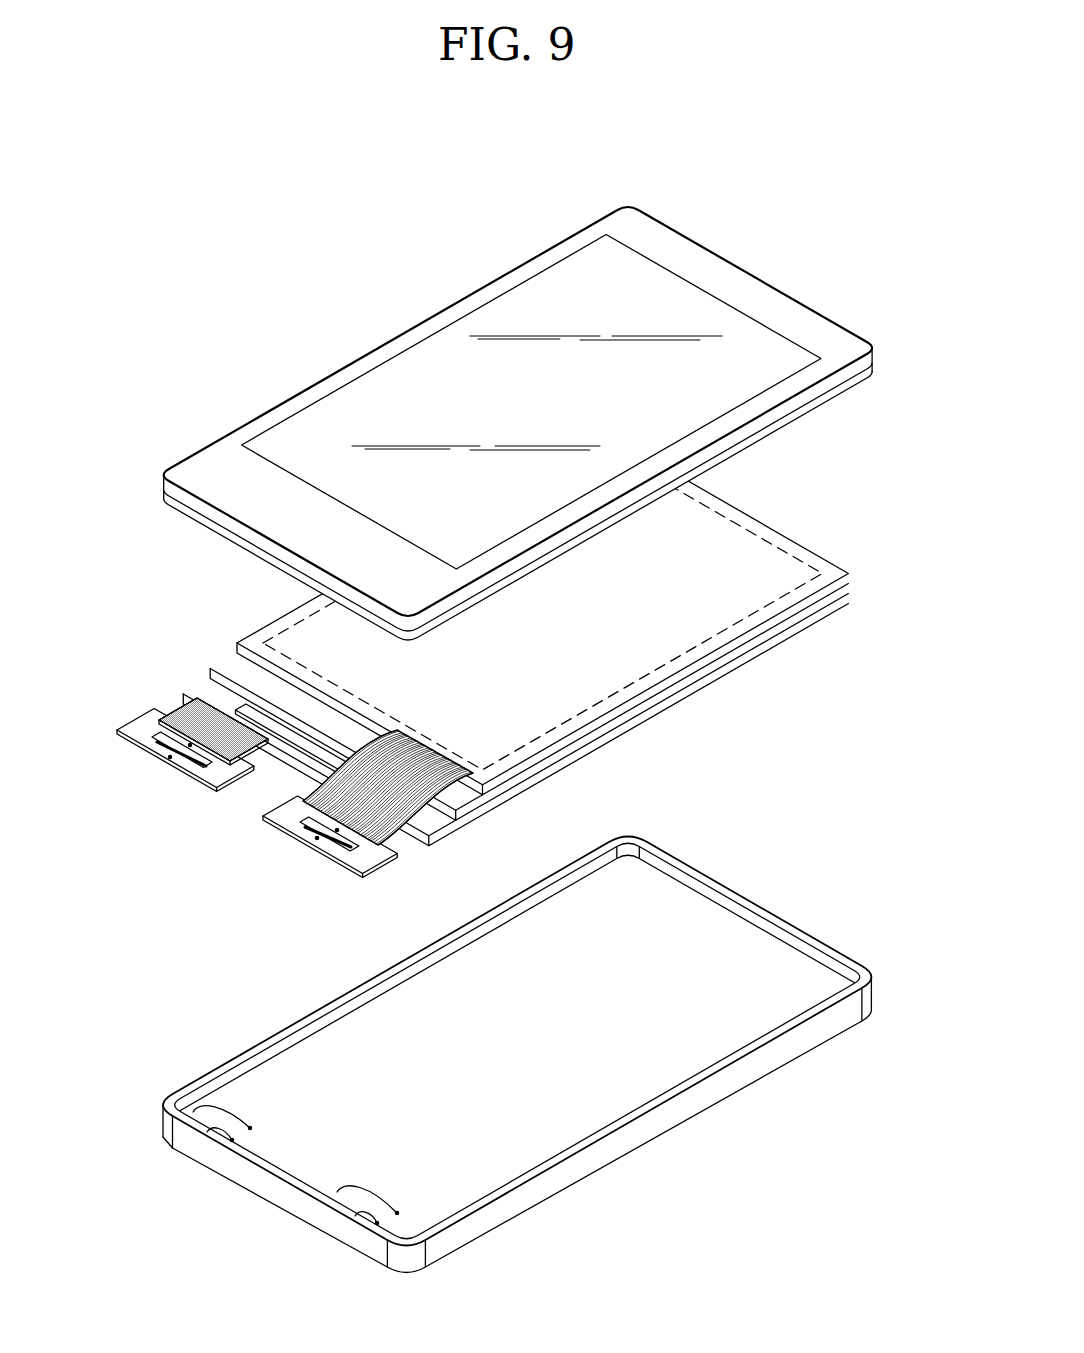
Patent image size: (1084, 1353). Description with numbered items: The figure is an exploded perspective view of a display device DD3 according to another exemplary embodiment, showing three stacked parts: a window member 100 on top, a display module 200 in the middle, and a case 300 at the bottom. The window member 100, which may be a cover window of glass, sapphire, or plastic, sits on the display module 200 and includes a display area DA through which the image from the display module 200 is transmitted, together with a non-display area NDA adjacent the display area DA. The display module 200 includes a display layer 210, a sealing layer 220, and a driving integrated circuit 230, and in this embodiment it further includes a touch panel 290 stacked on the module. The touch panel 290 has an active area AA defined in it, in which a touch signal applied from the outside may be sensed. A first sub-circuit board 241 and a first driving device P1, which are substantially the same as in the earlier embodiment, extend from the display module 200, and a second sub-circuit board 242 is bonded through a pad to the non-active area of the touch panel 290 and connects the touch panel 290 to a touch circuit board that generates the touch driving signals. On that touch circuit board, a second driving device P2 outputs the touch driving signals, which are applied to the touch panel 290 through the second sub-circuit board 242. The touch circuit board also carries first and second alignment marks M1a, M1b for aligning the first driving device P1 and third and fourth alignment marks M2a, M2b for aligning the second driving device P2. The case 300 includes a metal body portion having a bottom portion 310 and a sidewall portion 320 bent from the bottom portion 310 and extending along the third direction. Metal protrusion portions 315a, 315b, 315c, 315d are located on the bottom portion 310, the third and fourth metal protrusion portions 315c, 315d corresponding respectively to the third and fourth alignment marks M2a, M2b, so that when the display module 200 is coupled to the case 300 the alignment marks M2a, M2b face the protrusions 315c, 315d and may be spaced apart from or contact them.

The display device DD3 is at (338, 245).
The window member 100 is at (538, 415).
The display area DA is at (683, 308).
The non-display area NDA is at (763, 301).
The display module 200 is at (563, 639).
The active area AA is at (748, 531).
The touch panel 290 is at (848, 577).
The sealing layer 220 is at (848, 588).
The display layer 210 is at (848, 598).
The driving integrated circuit 230 is at (243, 708).
The first sub-circuit board 241 is at (193, 720).
The second sub-circuit board 242 is at (432, 822).
The first alignment mark M1a is at (168, 757).
The second alignment mark M1b is at (157, 740).
The first driving device P1 is at (186, 753).
The third alignment mark M2a is at (315, 838).
The fourth alignment mark M2b is at (300, 842).
The second driving device P2 is at (345, 849).
The case 300 is at (485, 1043).
The bottom portion 310 is at (756, 907).
The sidewall portion 320 is at (690, 910).
The first metal protrusion portion 315a is at (207, 1132).
The second metal protrusion portion 315b is at (167, 1139).
The third metal protrusion portion 315c is at (337, 1193).
The fourth metal protrusion portion 315d is at (355, 1217).